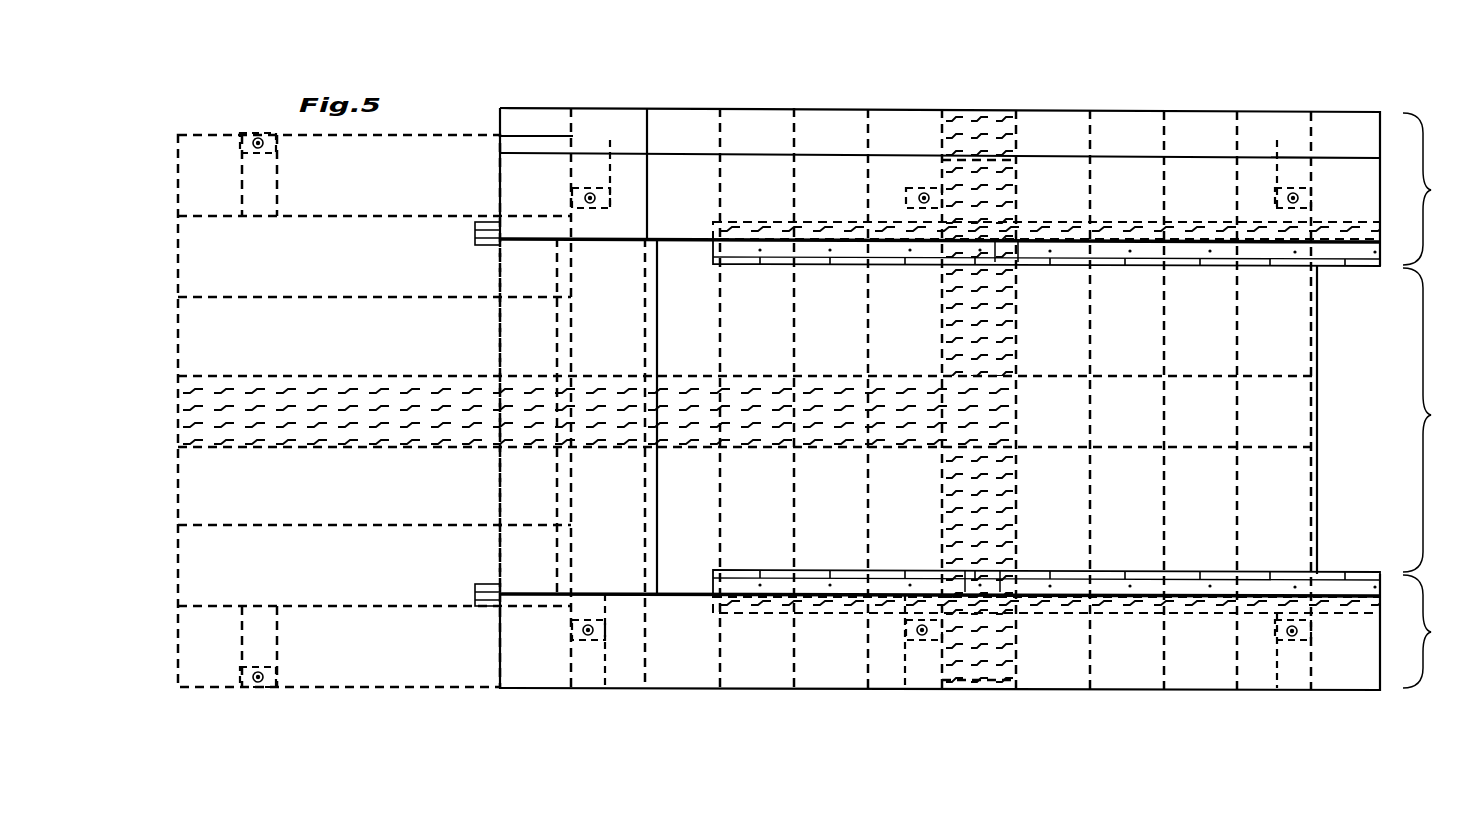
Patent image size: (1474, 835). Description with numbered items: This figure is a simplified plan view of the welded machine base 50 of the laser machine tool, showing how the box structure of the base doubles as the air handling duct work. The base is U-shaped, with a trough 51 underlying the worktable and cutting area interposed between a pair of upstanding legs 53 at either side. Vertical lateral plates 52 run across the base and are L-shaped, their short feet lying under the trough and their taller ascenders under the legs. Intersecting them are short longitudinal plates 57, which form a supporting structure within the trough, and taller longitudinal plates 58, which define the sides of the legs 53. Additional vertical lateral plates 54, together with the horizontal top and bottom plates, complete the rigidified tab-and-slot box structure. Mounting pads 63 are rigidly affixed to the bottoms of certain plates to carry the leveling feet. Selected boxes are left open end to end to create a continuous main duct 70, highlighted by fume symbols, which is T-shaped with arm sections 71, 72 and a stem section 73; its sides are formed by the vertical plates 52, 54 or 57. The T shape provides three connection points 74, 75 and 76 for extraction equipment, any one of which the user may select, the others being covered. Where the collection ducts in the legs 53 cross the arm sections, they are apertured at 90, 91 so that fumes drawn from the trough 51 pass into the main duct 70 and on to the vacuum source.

The machine frame assembly 50 is at (852, 80).
The trough 51 is at (1430, 420).
The vertical lateral plates 52 is at (1013, 408).
The upstanding legs 53 is at (1430, 400).
The vertical lateral plates 54 is at (1017, 204).
The short longitudinal plates 57 is at (745, 378).
The taller longitudinal plates 58 is at (700, 108).
The mounting pads 63 is at (594, 640).
The main duct 70 is at (845, 470).
The arm section 71 is at (990, 197).
The arm section 72 is at (990, 661).
The stem section 73 is at (392, 419).
The connection point 74 is at (977, 690).
The connection point 75 is at (983, 110).
The connection point 76 is at (178, 420).
The aperture 90 is at (1000, 592).
The aperture 91 is at (1016, 262).